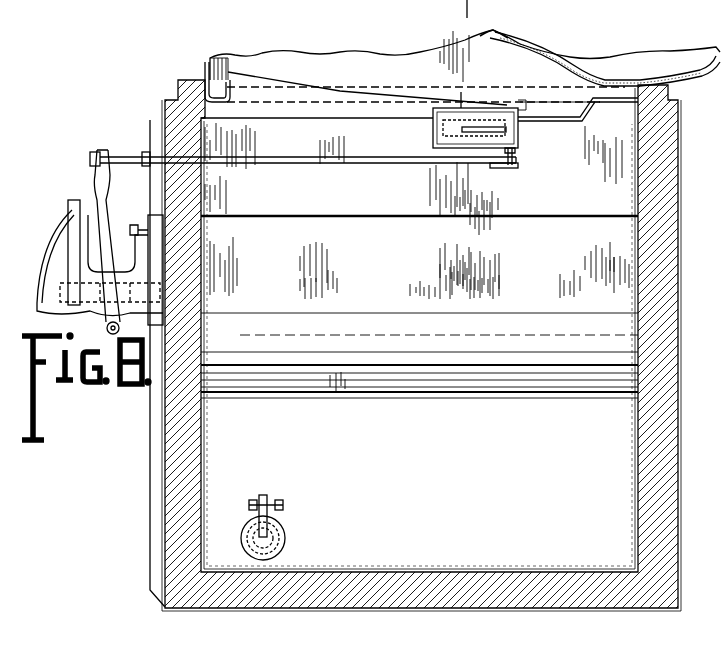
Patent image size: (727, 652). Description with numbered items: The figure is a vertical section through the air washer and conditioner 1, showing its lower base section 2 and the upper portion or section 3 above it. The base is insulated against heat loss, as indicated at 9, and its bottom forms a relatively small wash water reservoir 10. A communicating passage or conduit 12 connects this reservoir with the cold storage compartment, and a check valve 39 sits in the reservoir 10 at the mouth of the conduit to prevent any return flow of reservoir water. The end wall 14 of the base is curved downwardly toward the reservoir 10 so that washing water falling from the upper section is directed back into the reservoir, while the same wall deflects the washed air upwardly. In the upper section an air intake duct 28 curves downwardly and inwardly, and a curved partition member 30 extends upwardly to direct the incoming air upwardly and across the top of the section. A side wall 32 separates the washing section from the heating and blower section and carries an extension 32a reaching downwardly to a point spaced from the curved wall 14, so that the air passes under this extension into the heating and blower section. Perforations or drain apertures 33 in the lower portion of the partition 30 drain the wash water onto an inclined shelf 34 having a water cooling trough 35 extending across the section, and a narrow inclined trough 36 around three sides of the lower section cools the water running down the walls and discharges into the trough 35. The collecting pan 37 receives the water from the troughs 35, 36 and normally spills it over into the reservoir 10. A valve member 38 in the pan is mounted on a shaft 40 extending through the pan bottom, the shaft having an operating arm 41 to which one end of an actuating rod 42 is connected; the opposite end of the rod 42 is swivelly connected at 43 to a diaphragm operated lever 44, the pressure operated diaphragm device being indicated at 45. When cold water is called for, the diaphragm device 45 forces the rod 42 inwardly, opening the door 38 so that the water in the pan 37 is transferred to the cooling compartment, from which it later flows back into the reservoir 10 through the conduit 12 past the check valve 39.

The air washer and conditioner 1 is at (160, 540).
The lower base section 2 is at (163, 465).
The upper portion or section 3 is at (323, 58).
The insulation 9 is at (172, 423).
The wash water reservoir 10 is at (226, 471).
The communicating passage or conduit 12 is at (282, 523).
The end wall 14 is at (474, 362).
The air intake duct 28 is at (688, 70).
The curved partition member 30 is at (526, 46).
The side wall 32 is at (420, 41).
The extension 32a is at (462, 205).
The perforations or drain apertures 33 is at (630, 75).
The inclined shelf 34 is at (560, 92).
The water cooling trough 35 is at (562, 114).
The narrow inclined trough 36 is at (226, 79).
The collecting pan 37 is at (432, 122).
The valve member 38 is at (458, 120).
The check valve 39 is at (285, 541).
The shaft 40 is at (513, 153).
The operating arm 41 is at (503, 169).
The actuating rod 42 is at (400, 161).
The swivel connection 43 is at (130, 147).
The diaphragm operated lever 44 is at (107, 215).
The pressure operated diaphragm device 45 is at (62, 246).